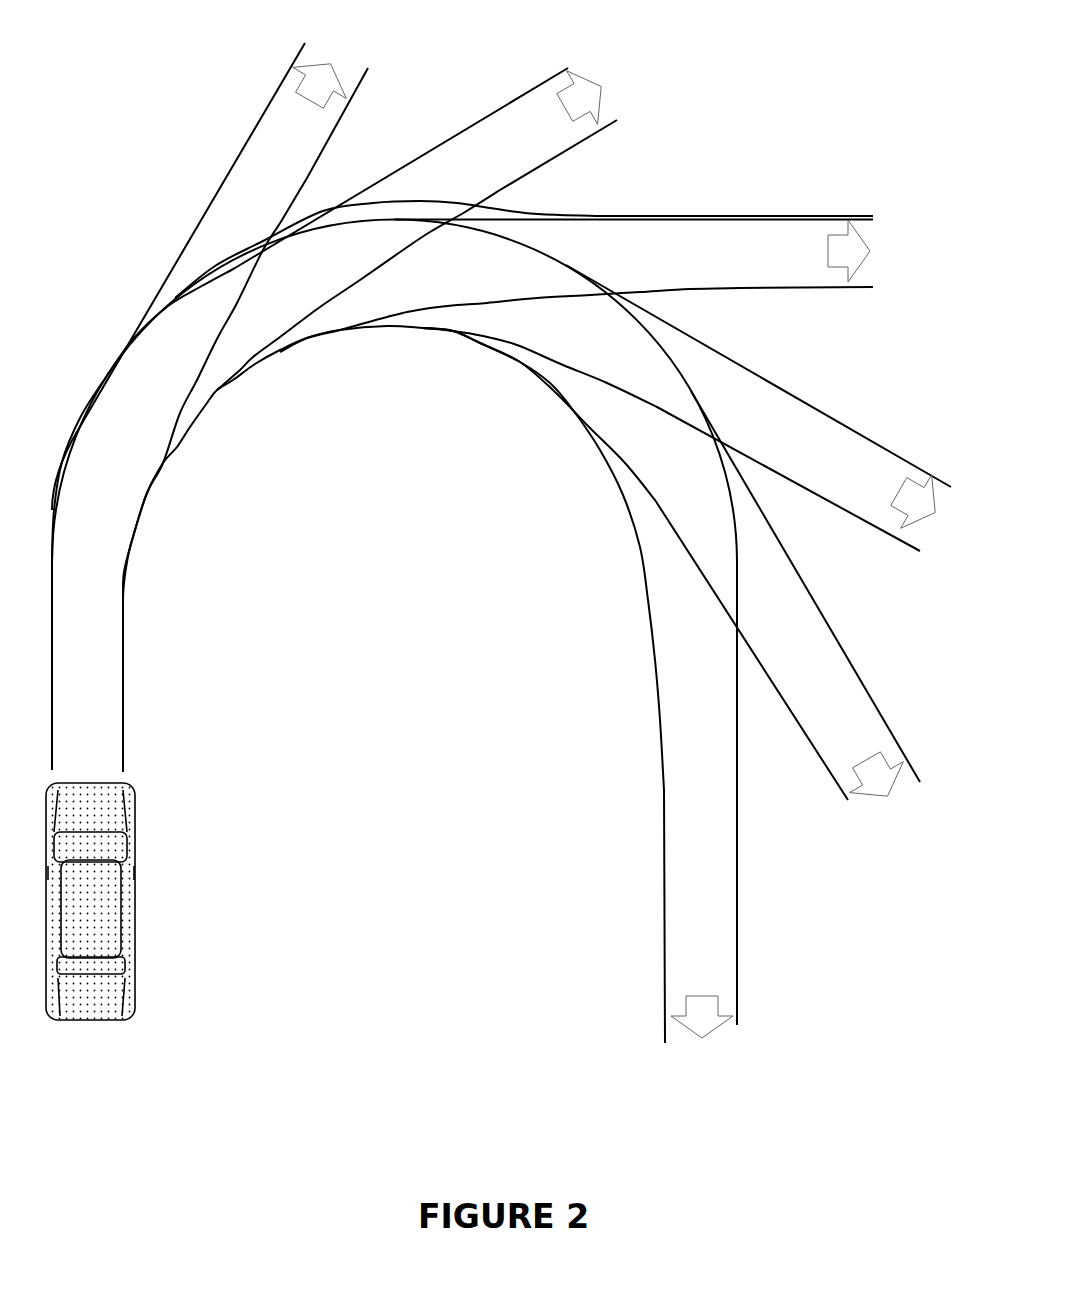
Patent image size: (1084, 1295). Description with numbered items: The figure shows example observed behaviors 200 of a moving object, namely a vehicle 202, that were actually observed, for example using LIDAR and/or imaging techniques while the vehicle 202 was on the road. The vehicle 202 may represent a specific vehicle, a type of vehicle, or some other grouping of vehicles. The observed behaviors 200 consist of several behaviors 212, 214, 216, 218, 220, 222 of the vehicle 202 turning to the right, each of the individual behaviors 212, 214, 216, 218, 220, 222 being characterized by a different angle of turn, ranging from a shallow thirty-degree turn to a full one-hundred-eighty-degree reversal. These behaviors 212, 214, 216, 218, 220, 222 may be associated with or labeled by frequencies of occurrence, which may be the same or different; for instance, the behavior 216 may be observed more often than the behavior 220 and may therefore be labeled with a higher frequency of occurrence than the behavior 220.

The observed behaviors 200 is at (770, 90).
The vehicle 202 is at (127, 910).
The behavior 212 is at (340, 133).
The behavior 214 is at (495, 110).
The behavior 216 is at (840, 290).
The behavior 218 is at (920, 468).
The behavior 220 is at (893, 735).
The behavior 222 is at (737, 883).